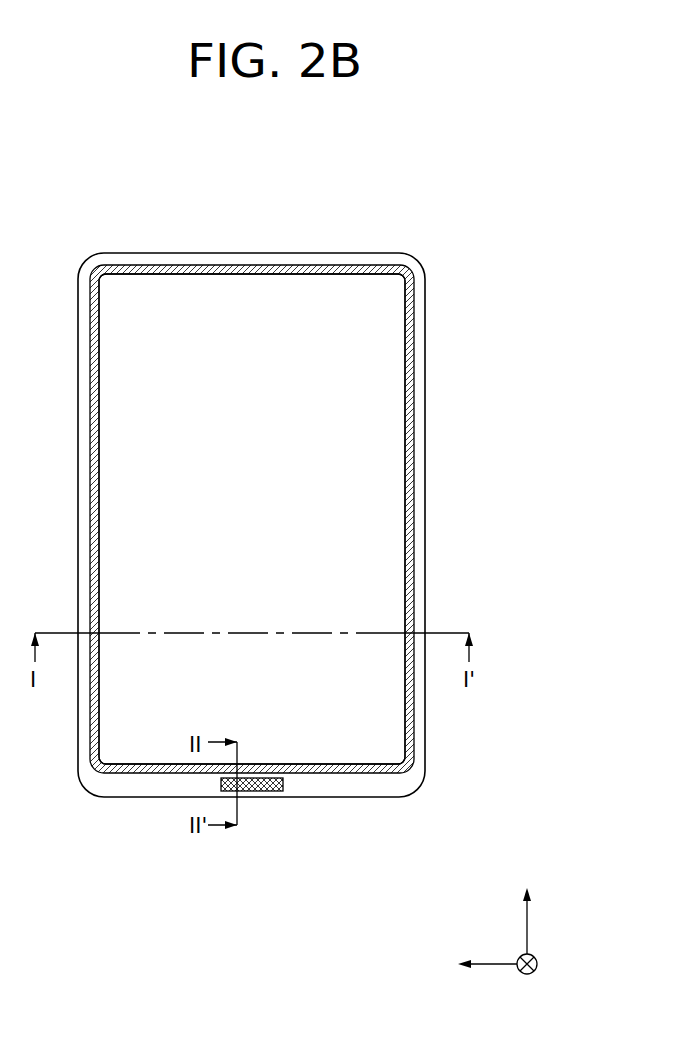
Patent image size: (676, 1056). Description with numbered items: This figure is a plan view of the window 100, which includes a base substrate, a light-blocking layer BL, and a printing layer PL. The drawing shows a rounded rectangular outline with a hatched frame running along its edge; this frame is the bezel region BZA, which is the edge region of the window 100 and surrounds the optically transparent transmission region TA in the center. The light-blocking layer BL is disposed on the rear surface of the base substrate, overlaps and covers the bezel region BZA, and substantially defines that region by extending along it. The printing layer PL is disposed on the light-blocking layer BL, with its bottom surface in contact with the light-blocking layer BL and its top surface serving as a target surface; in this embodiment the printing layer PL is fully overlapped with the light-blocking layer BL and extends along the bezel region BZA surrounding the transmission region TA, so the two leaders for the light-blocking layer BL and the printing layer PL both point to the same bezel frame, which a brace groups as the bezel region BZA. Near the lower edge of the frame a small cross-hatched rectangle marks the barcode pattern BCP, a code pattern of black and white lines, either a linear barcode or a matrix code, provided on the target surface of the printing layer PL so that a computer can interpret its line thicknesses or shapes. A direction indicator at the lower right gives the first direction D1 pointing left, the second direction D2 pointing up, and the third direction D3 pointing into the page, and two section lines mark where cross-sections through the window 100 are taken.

The window 100 is at (447, 211).
The transmission region TA is at (338, 293).
The printing layer PL is at (418, 426).
The light-blocking layer BL is at (413, 467).
The bezel region BZA is at (500, 414).
The barcode pattern BCP is at (258, 790).
The first direction D1 is at (473, 965).
The second direction D2 is at (529, 909).
The third direction D3 is at (529, 978).